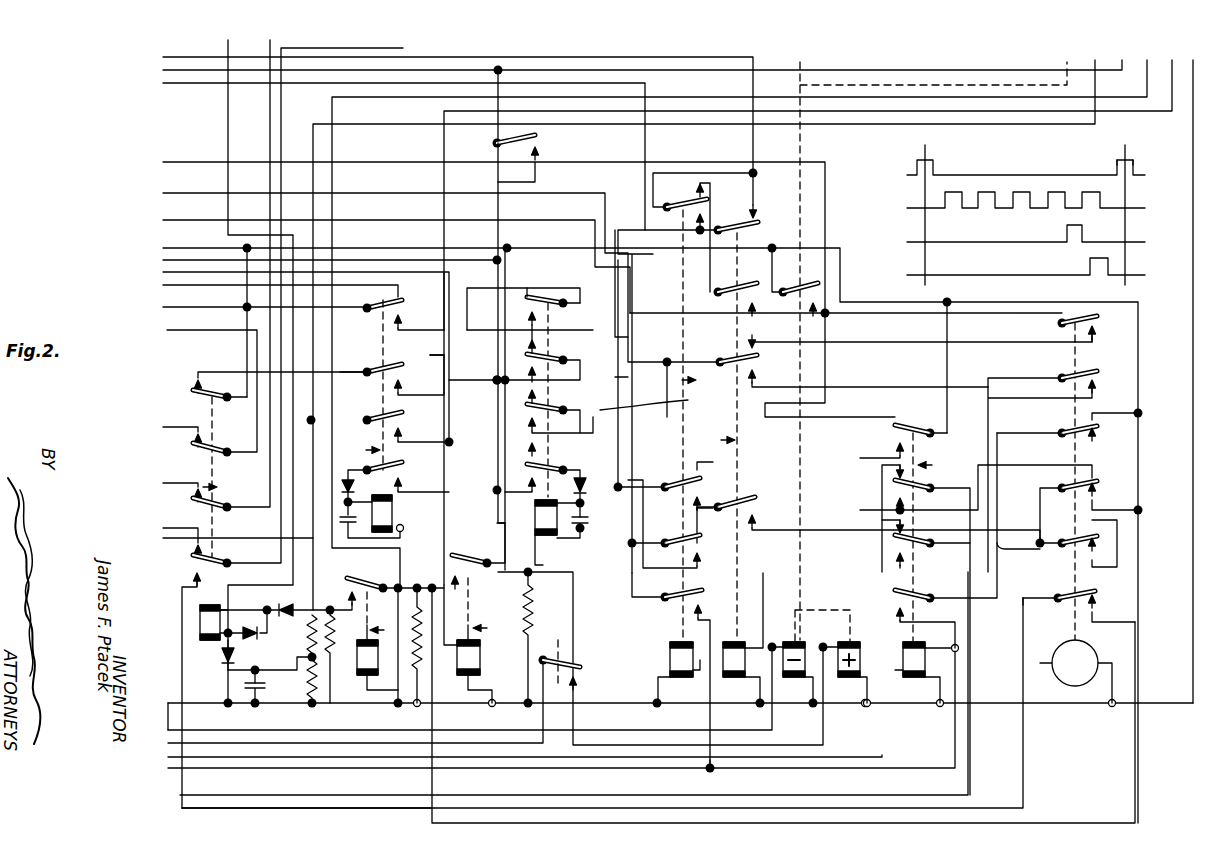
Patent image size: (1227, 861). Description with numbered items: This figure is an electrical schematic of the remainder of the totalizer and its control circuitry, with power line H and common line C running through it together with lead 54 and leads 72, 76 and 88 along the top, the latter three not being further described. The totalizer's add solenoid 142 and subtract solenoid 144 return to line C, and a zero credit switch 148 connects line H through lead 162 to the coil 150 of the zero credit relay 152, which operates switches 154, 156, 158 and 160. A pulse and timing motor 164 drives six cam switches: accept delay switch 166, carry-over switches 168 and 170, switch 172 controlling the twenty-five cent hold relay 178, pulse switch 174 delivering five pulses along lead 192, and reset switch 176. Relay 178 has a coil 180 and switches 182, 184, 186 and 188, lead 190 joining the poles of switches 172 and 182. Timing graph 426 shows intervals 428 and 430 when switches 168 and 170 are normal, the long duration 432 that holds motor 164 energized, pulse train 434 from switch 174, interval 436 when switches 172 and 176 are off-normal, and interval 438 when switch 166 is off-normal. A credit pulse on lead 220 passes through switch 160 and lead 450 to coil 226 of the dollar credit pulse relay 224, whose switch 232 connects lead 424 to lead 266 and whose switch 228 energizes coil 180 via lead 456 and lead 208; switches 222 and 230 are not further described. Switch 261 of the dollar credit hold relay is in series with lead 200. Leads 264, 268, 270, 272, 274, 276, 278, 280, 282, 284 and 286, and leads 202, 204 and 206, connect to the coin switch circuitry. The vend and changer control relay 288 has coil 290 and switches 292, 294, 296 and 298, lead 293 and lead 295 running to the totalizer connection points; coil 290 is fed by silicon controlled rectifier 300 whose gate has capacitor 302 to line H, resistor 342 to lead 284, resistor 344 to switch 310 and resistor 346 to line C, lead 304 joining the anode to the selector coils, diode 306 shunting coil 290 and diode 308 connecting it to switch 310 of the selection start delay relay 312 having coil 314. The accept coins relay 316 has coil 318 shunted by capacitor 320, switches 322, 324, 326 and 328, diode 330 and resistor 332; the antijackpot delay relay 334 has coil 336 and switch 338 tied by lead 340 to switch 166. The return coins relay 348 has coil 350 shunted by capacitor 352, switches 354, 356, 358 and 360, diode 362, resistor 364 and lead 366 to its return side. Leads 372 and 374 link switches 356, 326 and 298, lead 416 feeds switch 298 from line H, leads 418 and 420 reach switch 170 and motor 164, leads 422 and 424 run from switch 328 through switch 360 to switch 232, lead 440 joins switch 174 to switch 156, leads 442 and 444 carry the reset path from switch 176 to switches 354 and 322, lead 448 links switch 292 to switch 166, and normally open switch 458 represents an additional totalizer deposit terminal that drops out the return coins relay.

The lead 54 is at (163, 70).
The conductor 72 is at (1147, 66).
The conductor 76 is at (1172, 66).
The conductor 88 is at (1095, 62).
The add solenoid 142 is at (836, 680).
The subtract solenoid 144 is at (796, 680).
The zero credit switch 148 is at (808, 294).
The coil 150 is at (740, 638).
The zero credit relay 152 is at (728, 440).
The switch 154 is at (744, 514).
The switch 156 is at (738, 366).
The switch 158 is at (740, 296).
The switch 160 is at (755, 222).
The lead 162 is at (163, 162).
The pulse and timing motor 164 is at (1098, 654).
The accept delay switch 166 is at (1096, 594).
The carry-over switch 168 is at (1080, 538).
The carry-over switch 170 is at (1090, 484).
The switch 172 is at (1090, 432).
The pulse switch 174 is at (1090, 368).
The reset switch 176 is at (1072, 312).
The 25¢ hold relay 178 is at (926, 466).
The coil 180 is at (900, 676).
The switch 182 is at (914, 592).
The switch 184 is at (914, 538).
The switch 186 is at (880, 484).
The switch 188 is at (904, 422).
The lead 190 is at (1016, 552).
The lead 192 is at (1002, 408).
The lead 200 is at (202, 744).
The lead 202 is at (206, 766).
The lead 204 is at (163, 193).
The lead 206 is at (176, 806).
The lead 208 is at (184, 768).
The lead 220 is at (163, 57).
The relay contact 222 is at (700, 206).
The dollar credit pulse relay 224 is at (707, 380).
The coil 226 is at (163, 83).
The switch 228 is at (718, 594).
The relay contact 230 is at (678, 538).
The switch 232 is at (702, 478).
The switch 261 is at (578, 670).
The lead 264 is at (163, 220).
The lead 266 is at (640, 222).
The lead 268 is at (163, 260).
The lead 270 is at (163, 272).
The lead 272 is at (163, 285).
The lead 274 is at (163, 307).
The lead 276 is at (167, 330).
The lead 278 is at (163, 427).
The lead 280 is at (163, 483).
The lead 282 is at (163, 528).
The lead 284 is at (163, 538).
The lead 286 is at (184, 725).
The vend and changer control relay 288 is at (220, 488).
The coil 290 is at (198, 612).
The switch 292 is at (193, 558).
The lead 293 is at (403, 48).
The switch 294 is at (196, 499).
The lead 295 is at (276, 48).
The switch 296 is at (196, 447).
The switch 298 is at (192, 396).
The silicon controlled rectifier 300 is at (226, 659).
The capacitor 302 is at (258, 686).
The lead 304 is at (228, 64).
The diode 306 is at (260, 634).
The diode 308 is at (278, 606).
The switch 310 is at (398, 564).
The selection start delay relay 312 is at (384, 630).
The coil 314 is at (370, 680).
The accept coins relay 316 is at (364, 461).
The coil 318 is at (392, 514).
The capacitor 320 is at (338, 528).
The switch 322 is at (402, 466).
The switch 324 is at (402, 418).
The switch 326 is at (402, 366).
The switch 328 is at (402, 302).
The diode 330 is at (336, 490).
The resistor 332 is at (412, 650).
The antijackpot delay relay 334 is at (478, 628).
The coil 336 is at (472, 660).
The switch 338 is at (450, 556).
The lead 340 is at (480, 824).
The resistor 342 is at (296, 656).
The resistor 344 is at (330, 668).
The resistor 346 is at (324, 717).
The return coins relay 348 is at (562, 296).
The coil 350 is at (534, 536).
The capacitor 352 is at (580, 528).
The switch 354 is at (568, 466).
The switch 356 is at (538, 406).
The switch 358 is at (558, 354).
The switch 360 is at (530, 296).
The diode 362 is at (580, 508).
The resistor 364 is at (536, 606).
The lead 366 is at (478, 338).
The lead 372 is at (474, 436).
The lead 374 is at (338, 372).
The lead 416 is at (247, 318).
The lead 418 is at (628, 344).
The lead 420 is at (1026, 600).
The lead 422 is at (462, 294).
The lead 424 is at (662, 402).
The timing graph 426 is at (1025, 215).
The interval 428 is at (918, 160).
The interval 430 is at (1132, 160).
The duration 432 is at (1075, 162).
The pulse train 434 is at (926, 198).
The interval 436 is at (1064, 236).
The interval 438 is at (1088, 268).
The lead 440 is at (946, 386).
The lead 442 is at (856, 342).
The lead 444 is at (846, 322).
The lead 448 is at (266, 808).
The lead 450 is at (632, 574).
The lead 456 is at (710, 722).
The switch 458 is at (538, 138).